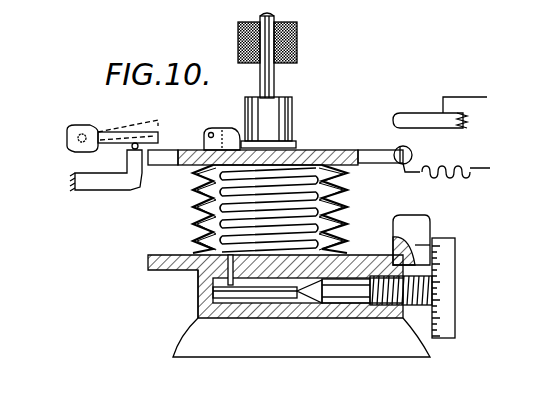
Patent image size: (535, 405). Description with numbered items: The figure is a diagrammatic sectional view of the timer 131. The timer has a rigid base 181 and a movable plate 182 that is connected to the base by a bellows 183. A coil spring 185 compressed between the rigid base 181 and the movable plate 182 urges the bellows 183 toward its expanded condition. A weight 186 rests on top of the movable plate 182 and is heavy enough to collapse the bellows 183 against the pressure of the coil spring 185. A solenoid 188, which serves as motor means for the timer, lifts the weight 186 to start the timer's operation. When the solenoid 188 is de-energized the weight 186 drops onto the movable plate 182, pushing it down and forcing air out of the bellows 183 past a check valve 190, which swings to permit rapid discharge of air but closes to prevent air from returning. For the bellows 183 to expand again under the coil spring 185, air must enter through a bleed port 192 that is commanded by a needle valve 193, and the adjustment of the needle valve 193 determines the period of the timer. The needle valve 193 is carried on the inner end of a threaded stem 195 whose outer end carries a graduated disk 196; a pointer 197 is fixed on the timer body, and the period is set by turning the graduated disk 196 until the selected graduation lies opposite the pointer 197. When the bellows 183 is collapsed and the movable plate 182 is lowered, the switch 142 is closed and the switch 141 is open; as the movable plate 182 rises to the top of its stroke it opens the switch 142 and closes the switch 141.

The timer 131 is at (172, 228).
The switch 141 is at (420, 113).
The switch 142 is at (110, 128).
The rigid base 181 is at (165, 271).
The movable plate 182 is at (335, 149).
The bellows 183 is at (345, 220).
The coil spring 185 is at (198, 212).
The weight 186 is at (292, 110).
The solenoid 188 is at (297, 30).
The check valve 190 is at (232, 150).
The bleed port 192 is at (197, 290).
The needle valve 193 is at (312, 304).
The threaded stem 195 is at (366, 308).
The graduated disk 196 is at (455, 262).
The pointer 197 is at (430, 237).